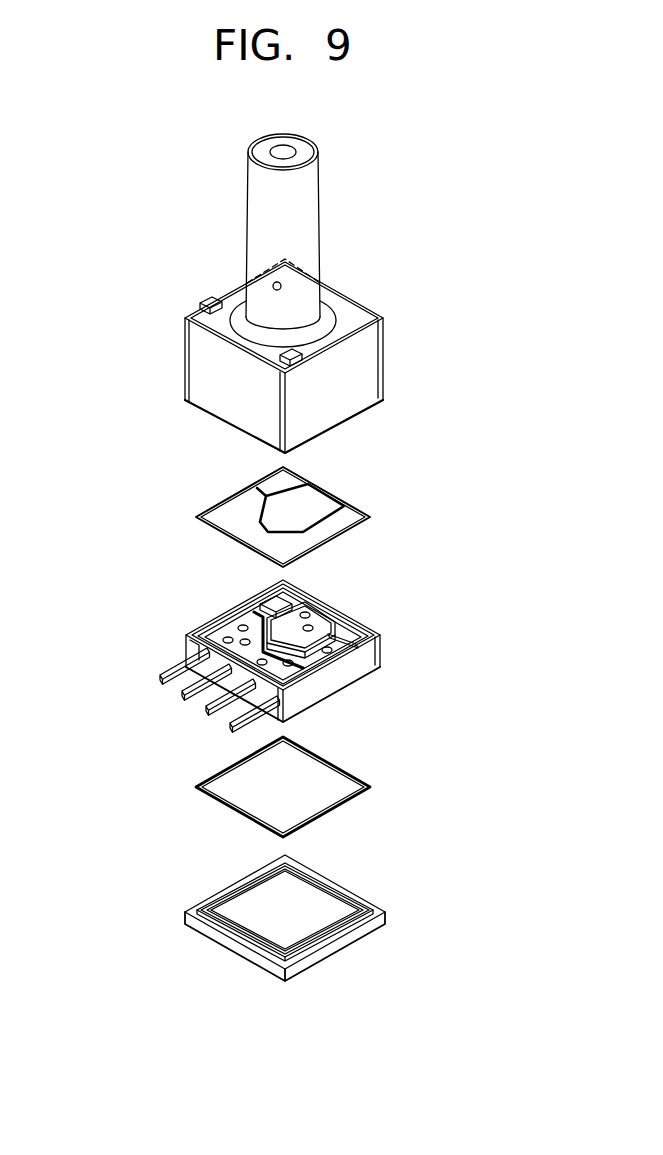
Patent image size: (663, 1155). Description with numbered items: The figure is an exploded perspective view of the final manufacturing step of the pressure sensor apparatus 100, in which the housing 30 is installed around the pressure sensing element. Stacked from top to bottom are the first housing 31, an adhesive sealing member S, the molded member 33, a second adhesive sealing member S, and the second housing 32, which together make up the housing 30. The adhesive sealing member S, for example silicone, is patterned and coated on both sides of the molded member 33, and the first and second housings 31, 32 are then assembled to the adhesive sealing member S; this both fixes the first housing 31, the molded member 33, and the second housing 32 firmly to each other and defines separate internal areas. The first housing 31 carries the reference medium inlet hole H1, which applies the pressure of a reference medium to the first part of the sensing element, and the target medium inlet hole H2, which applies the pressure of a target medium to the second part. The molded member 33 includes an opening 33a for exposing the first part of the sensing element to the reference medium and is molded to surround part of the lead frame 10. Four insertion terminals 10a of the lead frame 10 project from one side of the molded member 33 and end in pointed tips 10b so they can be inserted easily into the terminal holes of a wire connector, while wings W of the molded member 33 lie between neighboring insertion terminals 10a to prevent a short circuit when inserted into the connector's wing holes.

The pressure sensor apparatus 100 is at (418, 155).
The housing 30 is at (479, 371).
The first housing 31 is at (378, 373).
The second housing 32 is at (378, 930).
The molded member 33 is at (380, 657).
The opening 33a is at (298, 593).
The lead frame 10 is at (116, 744).
The insertion terminals 10a is at (258, 715).
The pointed tips 10b is at (157, 672).
The reference medium inlet hole H1 is at (277, 286).
The target medium inlet hole H2 is at (284, 148).
The adhesive sealing member S is at (217, 503).
The wings W is at (202, 653).